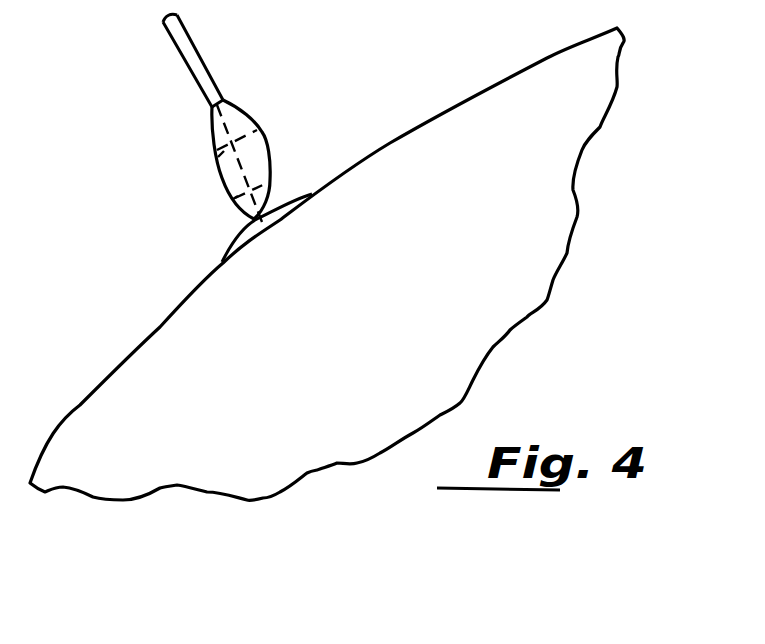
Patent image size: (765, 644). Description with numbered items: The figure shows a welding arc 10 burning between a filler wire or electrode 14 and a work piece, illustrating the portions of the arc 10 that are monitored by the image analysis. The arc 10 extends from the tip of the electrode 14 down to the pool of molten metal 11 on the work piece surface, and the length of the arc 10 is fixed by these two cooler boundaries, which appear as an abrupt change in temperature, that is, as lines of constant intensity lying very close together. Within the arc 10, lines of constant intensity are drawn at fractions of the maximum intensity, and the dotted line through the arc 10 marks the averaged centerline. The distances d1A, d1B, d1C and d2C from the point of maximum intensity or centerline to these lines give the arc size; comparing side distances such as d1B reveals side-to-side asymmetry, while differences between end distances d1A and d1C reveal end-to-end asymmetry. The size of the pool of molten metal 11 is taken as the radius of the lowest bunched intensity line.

The filler wire or electrode 14 is at (202, 70).
The arc 10 is at (260, 115).
The pool of molten metal 11 is at (245, 236).
The distance to line of constant intensity d1A is at (263, 133).
The distance to line of constant intensity d1B is at (217, 165).
The distance to line of constant intensity d1C is at (270, 182).
The distance to line of constant intensity d2C is at (235, 198).